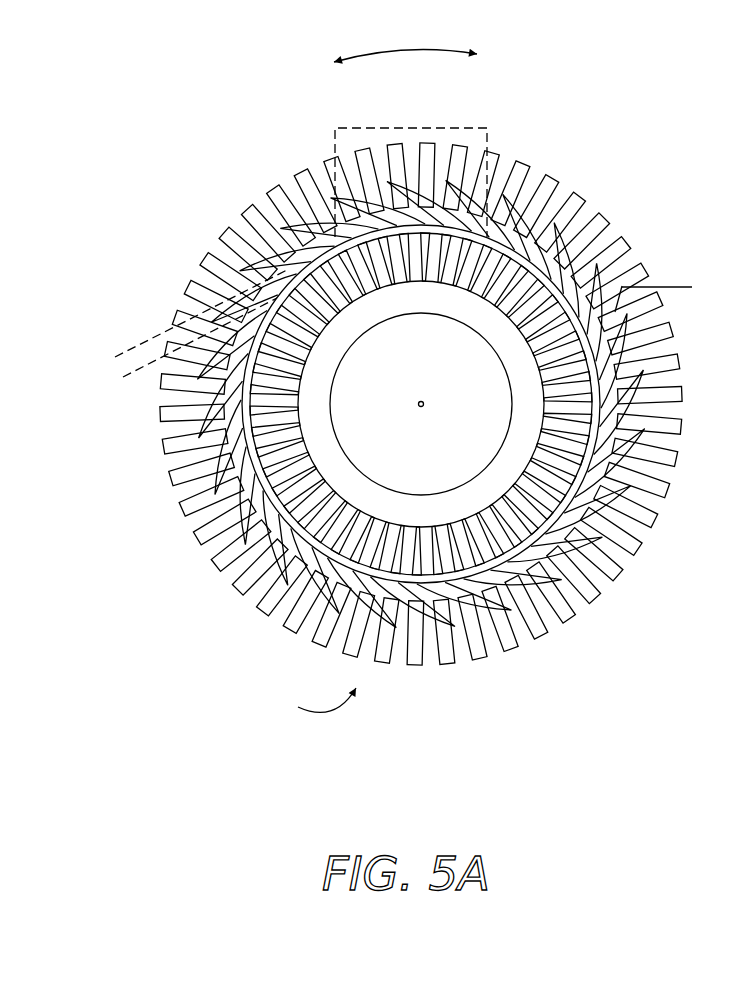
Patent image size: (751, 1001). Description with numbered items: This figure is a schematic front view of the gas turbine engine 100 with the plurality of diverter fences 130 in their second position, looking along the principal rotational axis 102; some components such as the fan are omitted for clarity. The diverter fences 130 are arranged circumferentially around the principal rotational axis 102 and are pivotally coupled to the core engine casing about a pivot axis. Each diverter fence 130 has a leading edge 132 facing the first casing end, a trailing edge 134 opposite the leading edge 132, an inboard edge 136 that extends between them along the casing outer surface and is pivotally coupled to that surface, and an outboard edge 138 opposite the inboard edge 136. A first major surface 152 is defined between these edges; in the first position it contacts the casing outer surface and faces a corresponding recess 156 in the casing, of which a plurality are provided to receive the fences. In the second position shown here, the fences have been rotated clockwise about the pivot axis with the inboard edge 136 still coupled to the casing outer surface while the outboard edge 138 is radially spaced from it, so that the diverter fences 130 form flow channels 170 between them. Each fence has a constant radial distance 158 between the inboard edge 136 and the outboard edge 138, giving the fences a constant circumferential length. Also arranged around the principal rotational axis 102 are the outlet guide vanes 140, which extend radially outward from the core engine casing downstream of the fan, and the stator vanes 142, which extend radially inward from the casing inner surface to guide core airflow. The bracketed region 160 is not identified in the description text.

The gas turbine engine 100 is at (636, 80).
The principal rotational axis 102 is at (418, 405).
The diverter fence 130 is at (590, 233).
The leading edge 132 is at (599, 236).
The trailing edge 134 is at (544, 213).
The inboard edge 136 is at (578, 261).
The outboard edge 138 is at (573, 225).
The outlet guide vane 140 is at (633, 550).
The stator vane 142 is at (465, 590).
The first major surface 152 is at (558, 208).
The recess 156 is at (281, 527).
The constant radial distance 158 is at (156, 398).
The tooth group 160 is at (405, 126).
The flow channel 170 is at (528, 214).